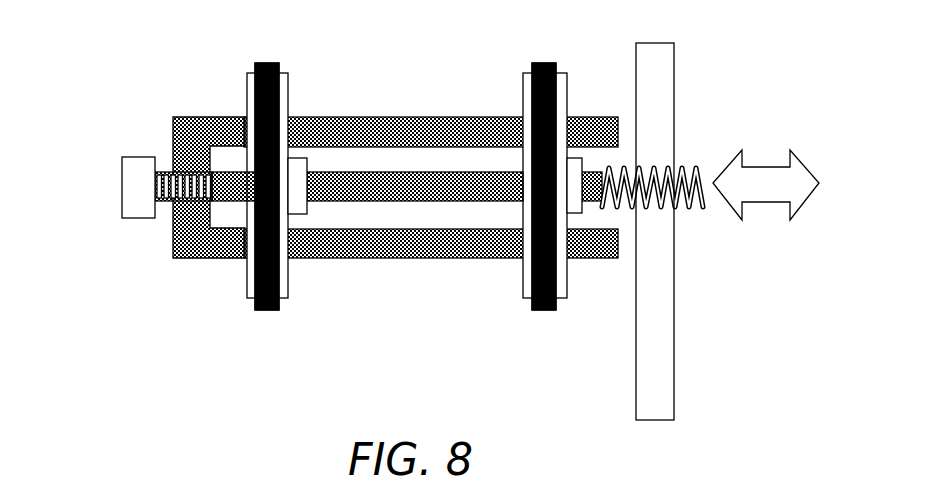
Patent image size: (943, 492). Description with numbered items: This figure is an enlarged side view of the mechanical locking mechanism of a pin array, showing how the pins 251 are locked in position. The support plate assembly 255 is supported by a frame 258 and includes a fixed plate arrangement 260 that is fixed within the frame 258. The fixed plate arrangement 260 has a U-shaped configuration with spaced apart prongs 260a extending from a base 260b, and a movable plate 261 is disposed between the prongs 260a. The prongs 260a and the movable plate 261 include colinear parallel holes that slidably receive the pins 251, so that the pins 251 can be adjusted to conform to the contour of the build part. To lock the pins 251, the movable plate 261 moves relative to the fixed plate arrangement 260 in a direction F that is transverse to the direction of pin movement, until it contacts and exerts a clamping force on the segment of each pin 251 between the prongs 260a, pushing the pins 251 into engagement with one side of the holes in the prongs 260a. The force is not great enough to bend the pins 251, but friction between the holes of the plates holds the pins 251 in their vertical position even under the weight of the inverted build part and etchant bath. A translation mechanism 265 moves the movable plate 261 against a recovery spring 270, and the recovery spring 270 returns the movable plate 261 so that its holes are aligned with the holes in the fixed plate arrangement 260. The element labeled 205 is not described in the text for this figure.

The support plate assembly 255 is at (198, 107).
The frame 205 is at (173, 118).
The pin 251 is at (268, 63).
The fixed plate arrangement 260 is at (207, 258).
The prongs 260a is at (585, 118).
The base 260b is at (177, 230).
The movable plate 261 is at (395, 188).
The translation mechanism 265 is at (105, 200).
The recovery spring 270 is at (693, 167).
The frame 258 is at (658, 368).
The direction F is at (765, 185).